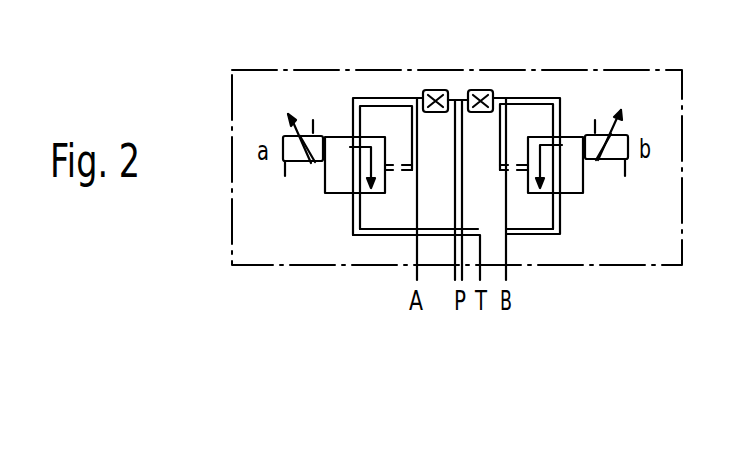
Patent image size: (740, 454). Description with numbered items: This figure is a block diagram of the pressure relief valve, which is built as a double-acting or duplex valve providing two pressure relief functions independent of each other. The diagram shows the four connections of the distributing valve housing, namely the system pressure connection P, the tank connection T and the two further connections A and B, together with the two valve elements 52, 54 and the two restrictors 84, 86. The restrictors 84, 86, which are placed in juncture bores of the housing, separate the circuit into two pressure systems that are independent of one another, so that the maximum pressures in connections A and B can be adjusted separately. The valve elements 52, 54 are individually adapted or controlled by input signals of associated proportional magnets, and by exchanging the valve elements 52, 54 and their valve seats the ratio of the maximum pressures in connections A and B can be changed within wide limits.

The valve element 52 is at (343, 177).
The valve element 54 is at (570, 172).
The restrictor 84 is at (436, 90).
The restrictor 86 is at (481, 90).